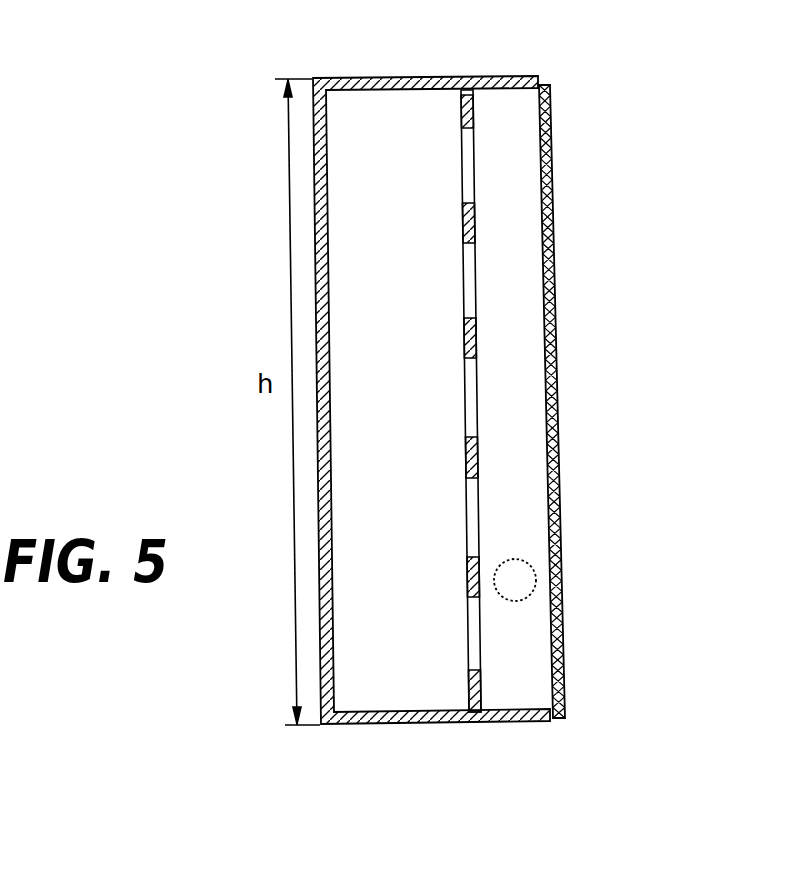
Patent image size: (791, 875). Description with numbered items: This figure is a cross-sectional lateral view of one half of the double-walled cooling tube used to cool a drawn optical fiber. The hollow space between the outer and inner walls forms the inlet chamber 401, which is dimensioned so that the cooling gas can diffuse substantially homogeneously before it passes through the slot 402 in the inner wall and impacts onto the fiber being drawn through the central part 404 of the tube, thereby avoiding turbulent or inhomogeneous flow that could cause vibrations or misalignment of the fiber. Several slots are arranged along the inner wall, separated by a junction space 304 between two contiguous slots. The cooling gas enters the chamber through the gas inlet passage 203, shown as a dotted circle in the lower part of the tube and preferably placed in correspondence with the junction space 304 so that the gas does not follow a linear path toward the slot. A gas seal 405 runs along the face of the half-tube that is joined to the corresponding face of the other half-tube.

The inlet chamber 401 is at (380, 115).
The slot 402 is at (472, 398).
The central part of the cooling tube 404 is at (520, 165).
The gas seal 405 is at (553, 203).
The junction space 304 is at (480, 462).
The gas inlet passage 203 is at (523, 580).